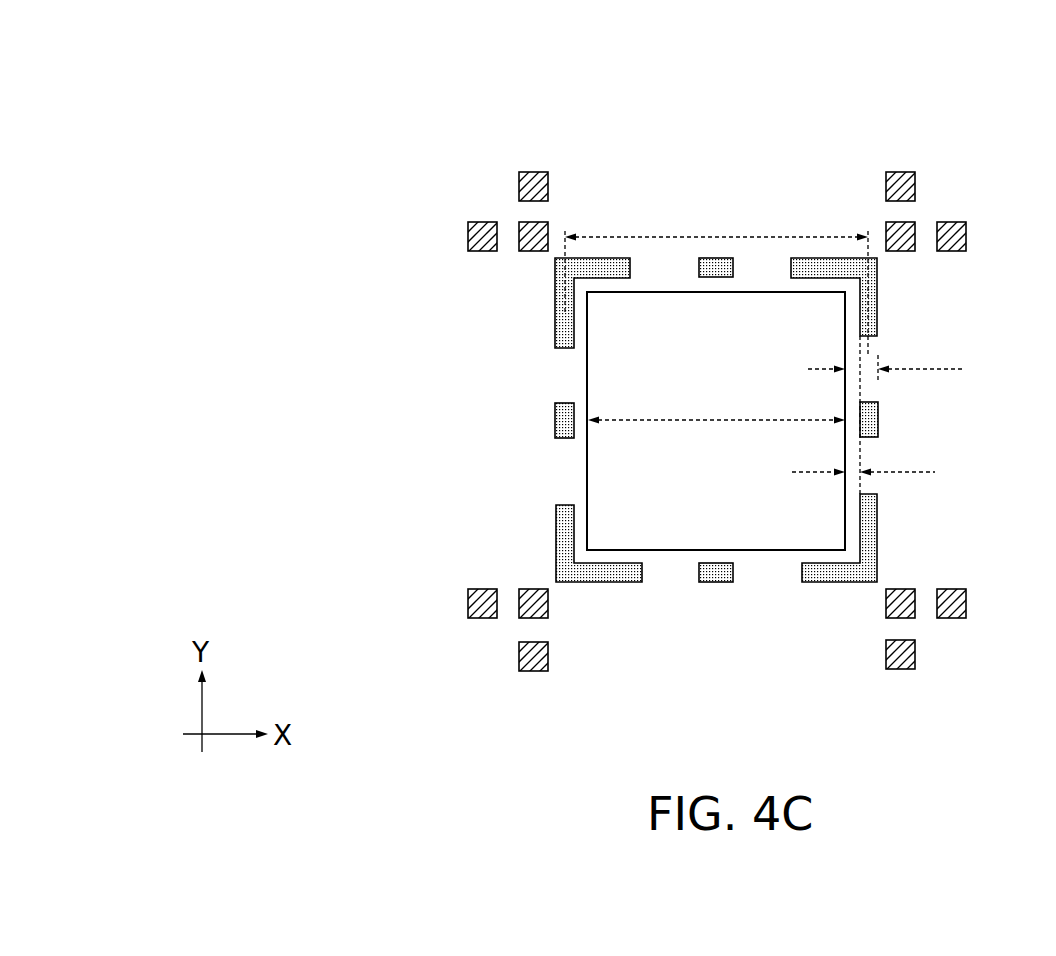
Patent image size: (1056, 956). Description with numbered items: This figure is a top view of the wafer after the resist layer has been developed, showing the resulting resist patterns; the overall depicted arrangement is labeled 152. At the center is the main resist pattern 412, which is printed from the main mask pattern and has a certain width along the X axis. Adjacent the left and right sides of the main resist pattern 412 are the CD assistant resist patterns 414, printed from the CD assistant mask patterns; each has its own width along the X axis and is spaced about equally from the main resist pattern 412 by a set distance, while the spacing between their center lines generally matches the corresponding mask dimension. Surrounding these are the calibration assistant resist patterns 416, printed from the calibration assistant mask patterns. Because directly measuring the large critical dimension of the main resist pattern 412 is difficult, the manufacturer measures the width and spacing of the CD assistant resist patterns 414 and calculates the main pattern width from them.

The alignment mark pattern 152 is at (812, 126).
The main resist pattern 412 is at (745, 513).
The CD assistant resist patterns 414 is at (878, 302).
The calibration assistant resist patterns 416 is at (548, 184).